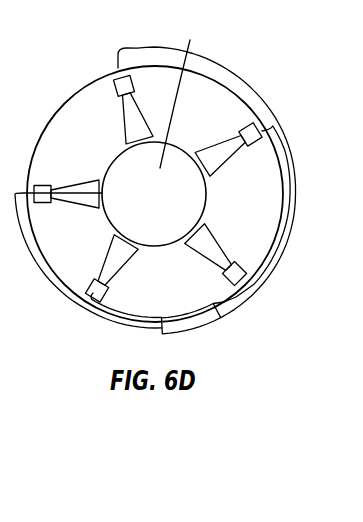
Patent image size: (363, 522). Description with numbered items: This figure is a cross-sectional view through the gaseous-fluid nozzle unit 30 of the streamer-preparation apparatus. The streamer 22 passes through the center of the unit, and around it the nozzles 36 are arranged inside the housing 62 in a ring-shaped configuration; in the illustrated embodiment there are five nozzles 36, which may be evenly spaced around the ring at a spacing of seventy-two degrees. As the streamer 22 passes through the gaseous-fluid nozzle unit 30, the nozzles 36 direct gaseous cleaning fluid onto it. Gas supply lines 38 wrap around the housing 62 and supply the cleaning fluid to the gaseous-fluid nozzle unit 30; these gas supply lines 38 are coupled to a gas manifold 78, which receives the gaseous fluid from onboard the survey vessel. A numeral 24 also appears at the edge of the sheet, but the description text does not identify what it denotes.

The streamer 22 is at (190, 48).
The housing 24 is at (0, 134).
The gaseous-fluid nozzle unit 30 is at (66, 331).
The nozzles 36 is at (121, 118).
The gas supply lines 38 is at (248, 83).
The housing 62 is at (83, 84).
The gas manifold 78 is at (190, 332).